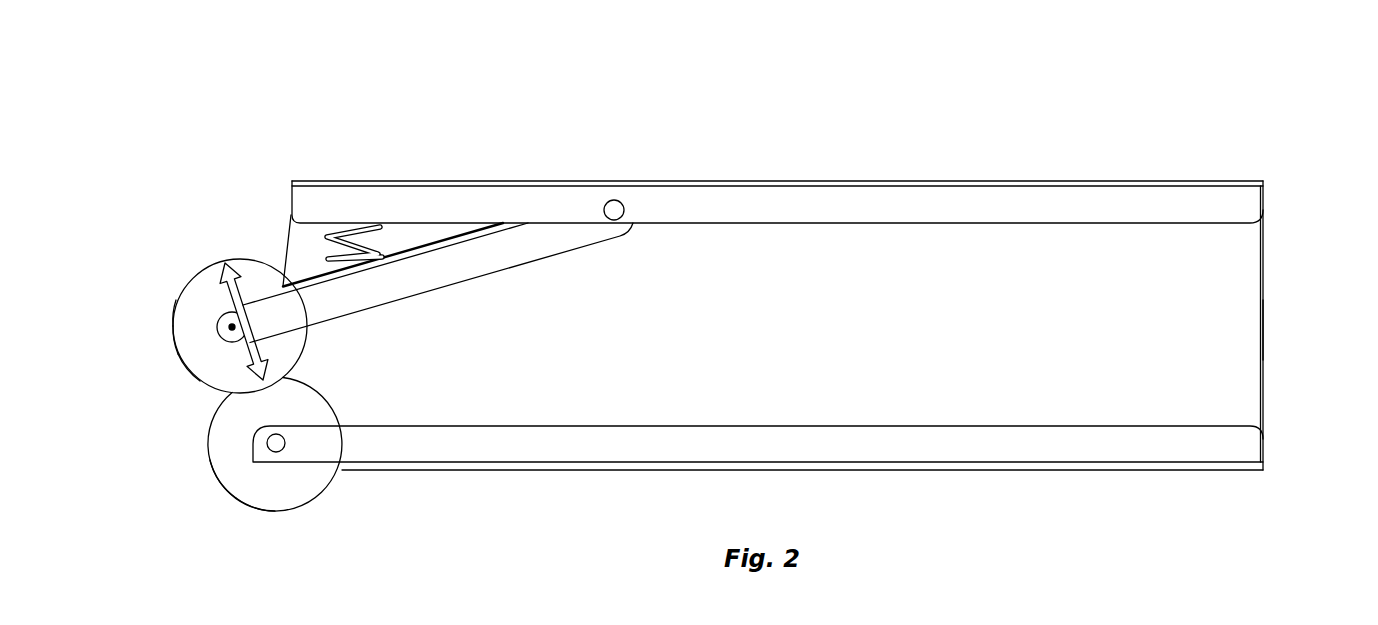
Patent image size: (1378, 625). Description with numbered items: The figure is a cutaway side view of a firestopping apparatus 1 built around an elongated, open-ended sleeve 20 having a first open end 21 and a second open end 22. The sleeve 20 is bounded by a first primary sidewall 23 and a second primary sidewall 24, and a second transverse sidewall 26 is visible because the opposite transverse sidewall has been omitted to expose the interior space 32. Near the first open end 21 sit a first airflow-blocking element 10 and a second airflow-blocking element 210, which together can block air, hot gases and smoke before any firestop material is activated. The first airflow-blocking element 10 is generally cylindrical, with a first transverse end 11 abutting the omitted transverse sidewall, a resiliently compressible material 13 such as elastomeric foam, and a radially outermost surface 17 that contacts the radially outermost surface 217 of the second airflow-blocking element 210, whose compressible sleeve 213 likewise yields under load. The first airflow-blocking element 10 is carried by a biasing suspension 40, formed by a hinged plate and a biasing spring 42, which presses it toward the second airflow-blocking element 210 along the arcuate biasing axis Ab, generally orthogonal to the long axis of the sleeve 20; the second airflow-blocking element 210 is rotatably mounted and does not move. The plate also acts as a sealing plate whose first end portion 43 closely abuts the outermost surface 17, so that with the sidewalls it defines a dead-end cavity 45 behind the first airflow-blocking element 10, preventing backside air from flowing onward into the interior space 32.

The firestopping apparatus 1 is at (1220, 75).
The sleeve 20 is at (1122, 167).
The first open end 21 is at (97, 315).
The second open end 22 is at (1282, 332).
The first primary sidewall 23 is at (918, 181).
The second primary sidewall 24 is at (577, 470).
The second transverse sidewall 26 is at (1248, 265).
The interior space 32 is at (761, 343).
The biasing suspension 40 is at (510, 167).
The biasing spring 42 is at (338, 233).
The first end portion 43 is at (292, 285).
The dead-end cavity 45 is at (412, 230).
The first airflow-blocking element 10 is at (203, 280).
The first transverse end 11 is at (188, 307).
The resiliently compressible material 13 is at (188, 343).
The radially outermost surface 17 is at (192, 377).
The second airflow-blocking element 210 is at (215, 452).
The resiliently compressible sleeve 213 is at (233, 488).
The radially outermost surface 217 is at (243, 507).
The biasing axis Ab is at (224, 266).